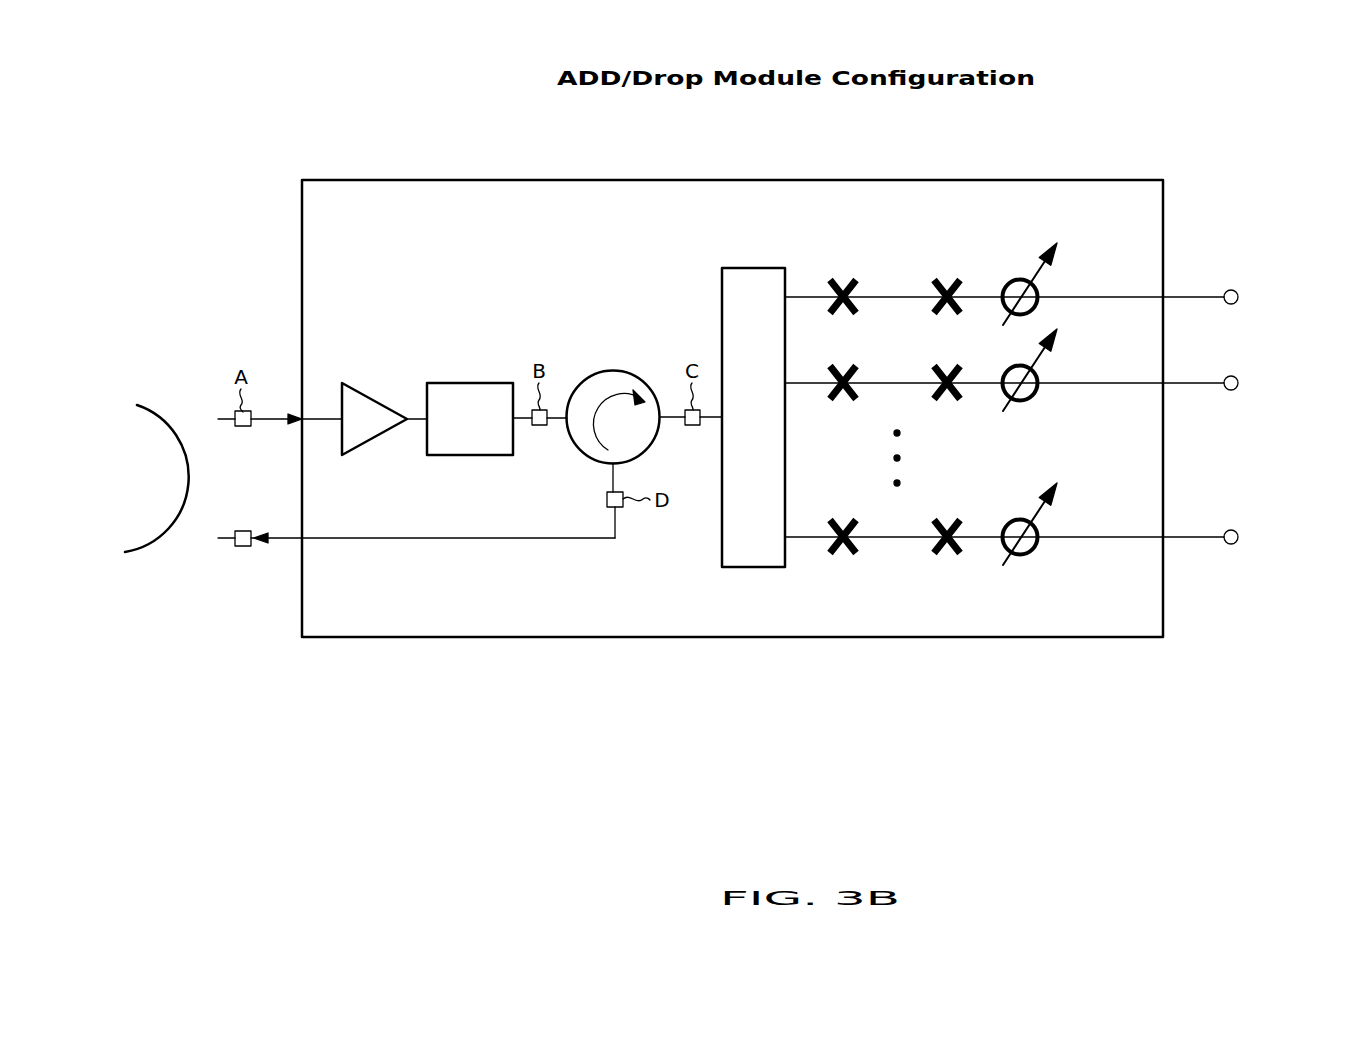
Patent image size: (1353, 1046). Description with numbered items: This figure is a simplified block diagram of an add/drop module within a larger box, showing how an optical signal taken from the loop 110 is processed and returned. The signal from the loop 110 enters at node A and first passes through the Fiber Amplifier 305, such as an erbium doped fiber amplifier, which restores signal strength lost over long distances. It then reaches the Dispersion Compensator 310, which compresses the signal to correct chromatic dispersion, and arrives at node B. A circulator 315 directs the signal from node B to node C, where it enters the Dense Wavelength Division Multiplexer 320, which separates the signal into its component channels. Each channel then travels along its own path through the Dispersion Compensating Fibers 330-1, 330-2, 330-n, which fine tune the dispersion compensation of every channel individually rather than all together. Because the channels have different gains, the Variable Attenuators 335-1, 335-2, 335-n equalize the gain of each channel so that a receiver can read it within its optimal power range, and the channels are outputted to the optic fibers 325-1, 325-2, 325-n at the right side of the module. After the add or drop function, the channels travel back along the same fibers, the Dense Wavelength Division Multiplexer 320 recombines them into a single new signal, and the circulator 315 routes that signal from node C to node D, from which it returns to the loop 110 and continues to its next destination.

The loop 110 is at (111, 512).
The Fiber Amplifier 305 is at (360, 383).
The Dispersion Compensator 310 is at (445, 455).
The circulator 315 is at (580, 453).
The Dense Wavelength Division Multiplexer 320 is at (720, 548).
The optic fiber 325-1 is at (1233, 290).
The optic fiber 325-2 is at (1233, 376).
The optic fiber 325-n is at (1233, 530).
The Dispersion Compensating Fiber 330-1 is at (891, 295).
The Dispersion Compensating Fiber 330-2 is at (891, 381).
The Dispersion Compensating Fiber 330-n is at (895, 541).
The Variable Attenuator 335-1 is at (1060, 257).
The Variable Attenuator 335-2 is at (1060, 343).
The Variable Attenuator 335-n is at (1060, 497).